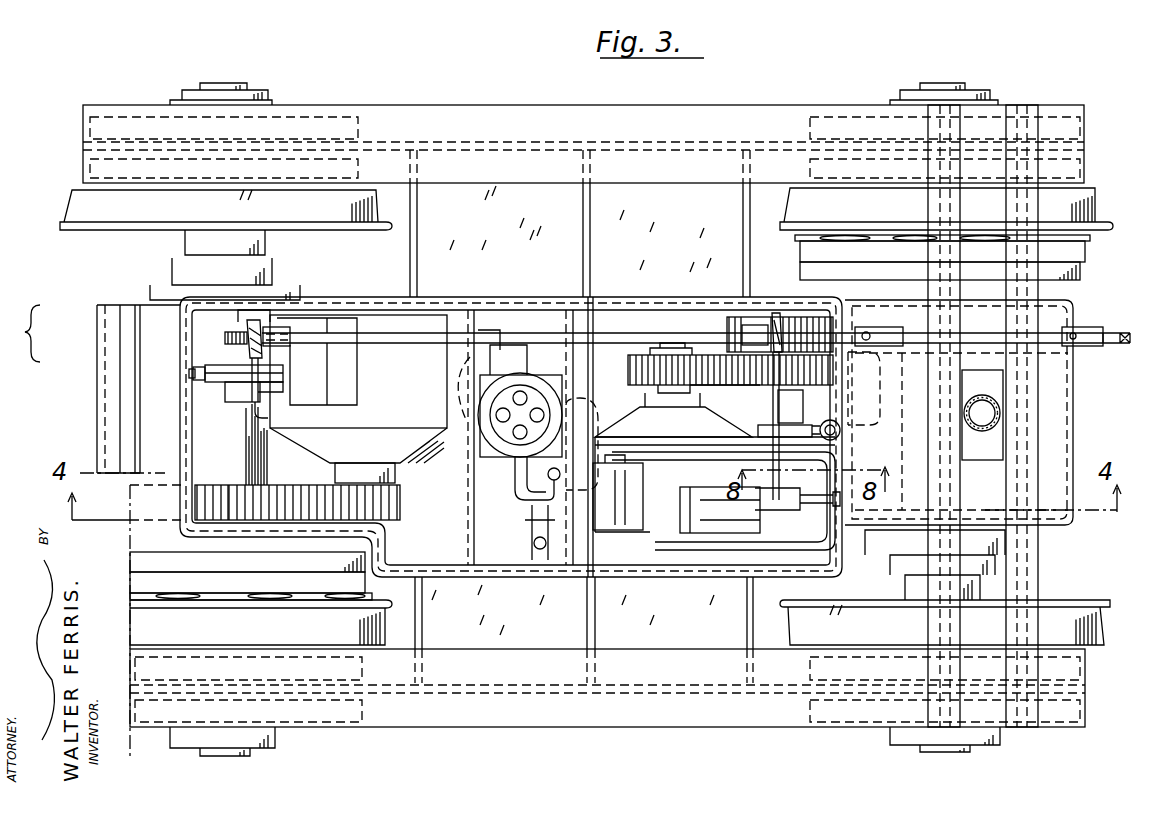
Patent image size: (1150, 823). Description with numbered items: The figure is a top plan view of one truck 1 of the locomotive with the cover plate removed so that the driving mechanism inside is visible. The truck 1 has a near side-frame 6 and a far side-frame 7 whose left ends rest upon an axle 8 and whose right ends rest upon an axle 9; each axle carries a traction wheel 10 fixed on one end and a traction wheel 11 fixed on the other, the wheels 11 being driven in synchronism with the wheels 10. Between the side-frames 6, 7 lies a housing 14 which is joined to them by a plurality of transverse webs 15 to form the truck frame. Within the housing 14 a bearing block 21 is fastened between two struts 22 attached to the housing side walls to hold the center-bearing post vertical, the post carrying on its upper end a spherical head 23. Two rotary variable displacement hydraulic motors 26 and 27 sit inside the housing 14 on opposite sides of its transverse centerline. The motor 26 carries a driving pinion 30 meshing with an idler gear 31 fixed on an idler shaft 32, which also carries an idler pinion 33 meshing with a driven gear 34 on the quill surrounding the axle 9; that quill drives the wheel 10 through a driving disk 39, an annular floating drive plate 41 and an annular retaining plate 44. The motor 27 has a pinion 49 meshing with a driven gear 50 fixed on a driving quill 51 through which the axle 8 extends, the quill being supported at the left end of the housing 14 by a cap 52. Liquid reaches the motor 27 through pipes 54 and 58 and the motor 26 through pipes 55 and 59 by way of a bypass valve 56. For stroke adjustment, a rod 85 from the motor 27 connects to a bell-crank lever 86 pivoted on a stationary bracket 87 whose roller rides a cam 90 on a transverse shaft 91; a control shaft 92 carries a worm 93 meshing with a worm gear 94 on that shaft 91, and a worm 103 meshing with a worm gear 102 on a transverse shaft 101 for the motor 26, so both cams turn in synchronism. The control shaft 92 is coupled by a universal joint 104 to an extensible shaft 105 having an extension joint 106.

The truck 1 is at (24, 333).
The near side-frame 6 is at (620, 728).
The far side-frame 7 is at (613, 114).
The axle 8 is at (250, 756).
The axle 9 is at (960, 752).
The traction wheel 10 is at (621, 416).
The traction wheel 11 is at (585, 417).
The housing 14 is at (679, 578).
The transverse web 15 is at (418, 211).
The bearing block 21 is at (555, 362).
The strut 22 is at (580, 318).
The spherical head 23 is at (508, 452).
The rotary variable displacement hydraulic motor 26 is at (717, 467).
The rotary variable displacement hydraulic motor 27 is at (358, 389).
The driving pinion 30 is at (628, 366).
The idler gear 31 is at (734, 379).
The idler shaft 32 is at (796, 398).
The idler pinion 33 is at (727, 328).
The driven gear 34 is at (886, 380).
The driving disk 39 is at (1080, 271).
The annular floating drive plate 41 is at (1085, 253).
The annular retaining plate 44 is at (1090, 238).
The pinion 49 is at (348, 496).
The driven gear 50 is at (230, 490).
The driving quill 51 is at (341, 421).
The cap 52 is at (97, 395).
The pipe 54 is at (495, 348).
The pipe 55 is at (582, 420).
The bypass valve 56 is at (618, 492).
The pipe 58 is at (520, 350).
The pipe 59 is at (515, 503).
The rod 85 is at (196, 375).
The bell-crank lever 86 is at (212, 370).
The stationary bracket 87 is at (216, 386).
The cam 90 is at (280, 374).
The transverse shaft 91 is at (266, 418).
The control shaft 92 is at (402, 334).
The worm 93 is at (250, 352).
The worm gear 94 is at (238, 340).
The transverse shaft 101 is at (773, 398).
The worm gear 102 is at (800, 324).
The worm 103 is at (772, 325).
The universal joint 104 is at (879, 336).
The extensible shaft 105 is at (1003, 333).
The extension joint 106 is at (1090, 327).